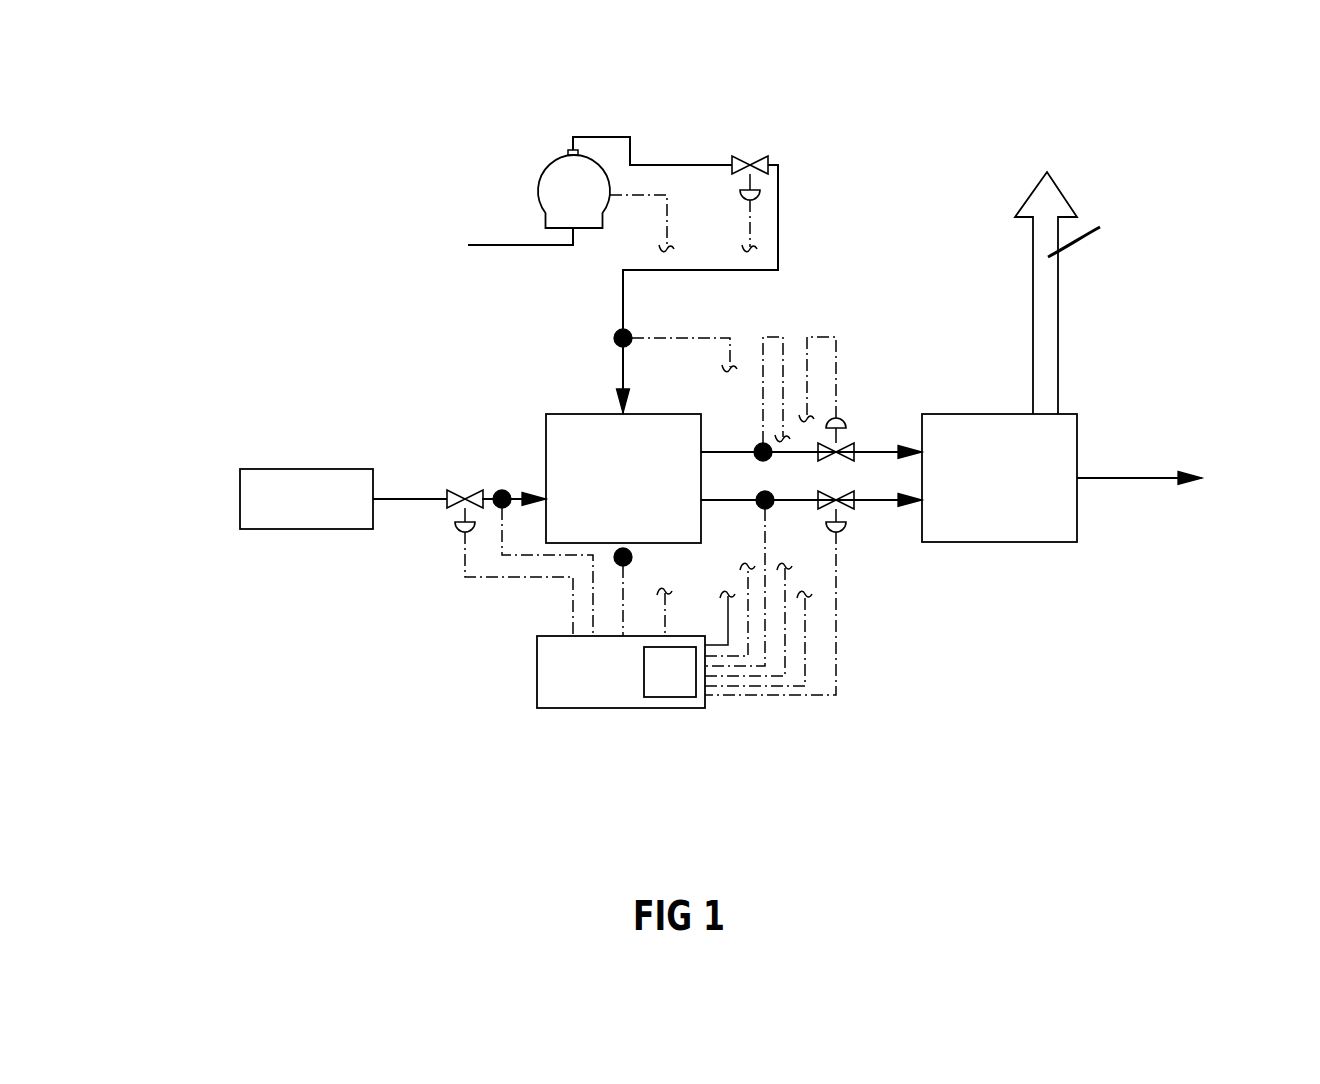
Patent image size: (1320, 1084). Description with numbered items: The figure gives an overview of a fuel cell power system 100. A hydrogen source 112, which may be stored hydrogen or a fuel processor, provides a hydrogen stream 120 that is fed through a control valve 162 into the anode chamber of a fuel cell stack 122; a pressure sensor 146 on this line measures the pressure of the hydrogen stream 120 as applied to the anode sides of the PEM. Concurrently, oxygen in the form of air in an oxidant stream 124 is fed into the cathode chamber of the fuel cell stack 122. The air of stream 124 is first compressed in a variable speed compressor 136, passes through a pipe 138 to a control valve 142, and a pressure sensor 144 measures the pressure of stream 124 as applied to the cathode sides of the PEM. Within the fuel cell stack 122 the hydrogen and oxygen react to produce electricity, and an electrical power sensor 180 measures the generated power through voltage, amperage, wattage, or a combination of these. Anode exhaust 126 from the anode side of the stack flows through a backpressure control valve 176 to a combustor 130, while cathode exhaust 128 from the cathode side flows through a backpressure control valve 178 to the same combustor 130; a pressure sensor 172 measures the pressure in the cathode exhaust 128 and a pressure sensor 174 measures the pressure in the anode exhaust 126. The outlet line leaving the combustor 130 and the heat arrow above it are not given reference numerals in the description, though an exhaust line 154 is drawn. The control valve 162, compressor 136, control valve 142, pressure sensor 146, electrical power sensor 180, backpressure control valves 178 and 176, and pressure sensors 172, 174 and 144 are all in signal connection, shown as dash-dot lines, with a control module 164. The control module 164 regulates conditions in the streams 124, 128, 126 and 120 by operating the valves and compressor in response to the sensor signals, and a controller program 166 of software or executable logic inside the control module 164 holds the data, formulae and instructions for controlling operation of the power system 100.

The fuel cell power system 100 is at (1104, 593).
The hydrogen source 112 is at (243, 480).
The hydrogen stream 120 is at (413, 500).
The fuel cell stack 122 is at (552, 427).
The oxidant stream 124 is at (622, 372).
The anode exhaust 126 is at (877, 503).
The cathode exhaust 128 is at (888, 448).
The combustor 130 is at (1068, 437).
The compressor 136 is at (545, 187).
The pipe 138 is at (657, 165).
The control valve 142 is at (750, 163).
The pressure sensor 144 is at (615, 338).
The pressure sensor 146 is at (503, 490).
The combustor exhaust 154 is at (1135, 478).
The control valve 162 is at (455, 537).
The control module 164 is at (610, 698).
The controller program 166 is at (650, 684).
The pressure sensor 172 is at (758, 446).
The pressure sensor 174 is at (760, 508).
The backpressure control valve 176 is at (840, 533).
The backpressure control valve 178 is at (843, 424).
The electrical power sensor 180 is at (632, 560).